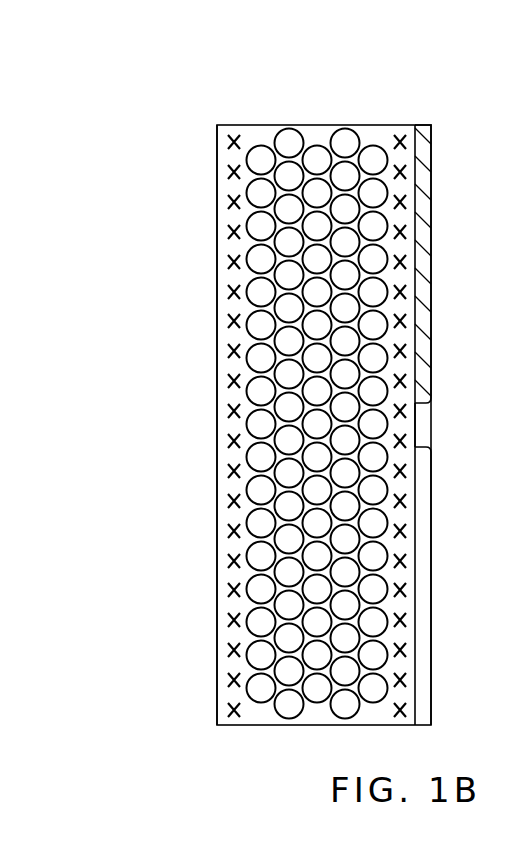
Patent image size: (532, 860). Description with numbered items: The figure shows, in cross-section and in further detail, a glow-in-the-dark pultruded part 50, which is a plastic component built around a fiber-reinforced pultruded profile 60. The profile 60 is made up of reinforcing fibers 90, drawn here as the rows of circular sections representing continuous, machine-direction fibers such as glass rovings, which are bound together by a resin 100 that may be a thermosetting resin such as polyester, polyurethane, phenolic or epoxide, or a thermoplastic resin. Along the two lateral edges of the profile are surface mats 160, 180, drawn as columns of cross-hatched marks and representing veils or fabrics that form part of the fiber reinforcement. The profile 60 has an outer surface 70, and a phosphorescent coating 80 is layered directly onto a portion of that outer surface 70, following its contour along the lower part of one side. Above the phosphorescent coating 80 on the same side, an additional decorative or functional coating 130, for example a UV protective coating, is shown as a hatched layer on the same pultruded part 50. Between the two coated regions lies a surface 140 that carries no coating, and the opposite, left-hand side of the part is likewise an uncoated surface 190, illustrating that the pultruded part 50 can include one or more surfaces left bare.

The pultruded part 50 is at (191, 107).
The fiber-reinforced pultruded profile 60 is at (263, 135).
The outer surface 70 is at (415, 433).
The phosphorescent coating 80 is at (427, 532).
The reinforcing fibers 90 is at (290, 140).
The resin 100 is at (368, 138).
The decorative or functional coating 130 is at (432, 278).
The surface without coating 140 is at (415, 418).
The surface mat 160 is at (400, 140).
The surface mat 180 is at (235, 136).
The surface without coating 190 is at (217, 467).